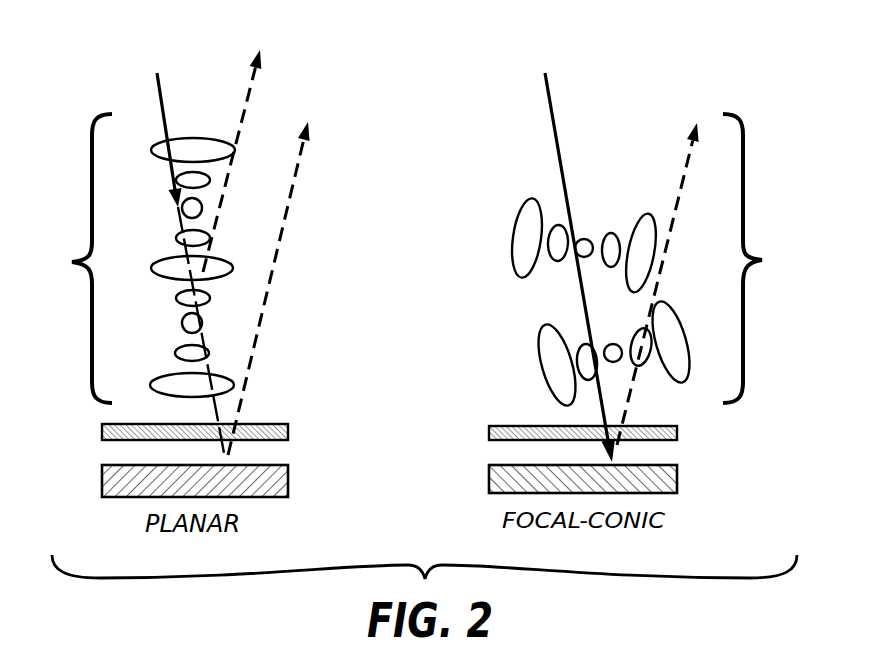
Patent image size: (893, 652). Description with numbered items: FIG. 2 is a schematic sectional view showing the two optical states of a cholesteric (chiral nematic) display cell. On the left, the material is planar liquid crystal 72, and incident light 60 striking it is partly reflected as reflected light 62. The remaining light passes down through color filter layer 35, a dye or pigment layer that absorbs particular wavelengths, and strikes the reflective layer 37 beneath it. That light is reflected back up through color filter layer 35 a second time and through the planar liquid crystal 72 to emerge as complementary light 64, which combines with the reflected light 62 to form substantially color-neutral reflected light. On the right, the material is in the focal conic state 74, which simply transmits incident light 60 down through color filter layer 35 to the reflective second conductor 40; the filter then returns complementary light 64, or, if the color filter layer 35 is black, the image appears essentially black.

The color filter layer 35 is at (102, 435).
The reflective layer 37 is at (102, 487).
The reflective second conductor 40 is at (678, 475).
The incident light 60 is at (156, 77).
The reflected light 62 is at (247, 88).
The complementary light 64 is at (303, 173).
The planar liquid crystal 72 is at (136, 258).
The focal conic state 74 is at (654, 262).